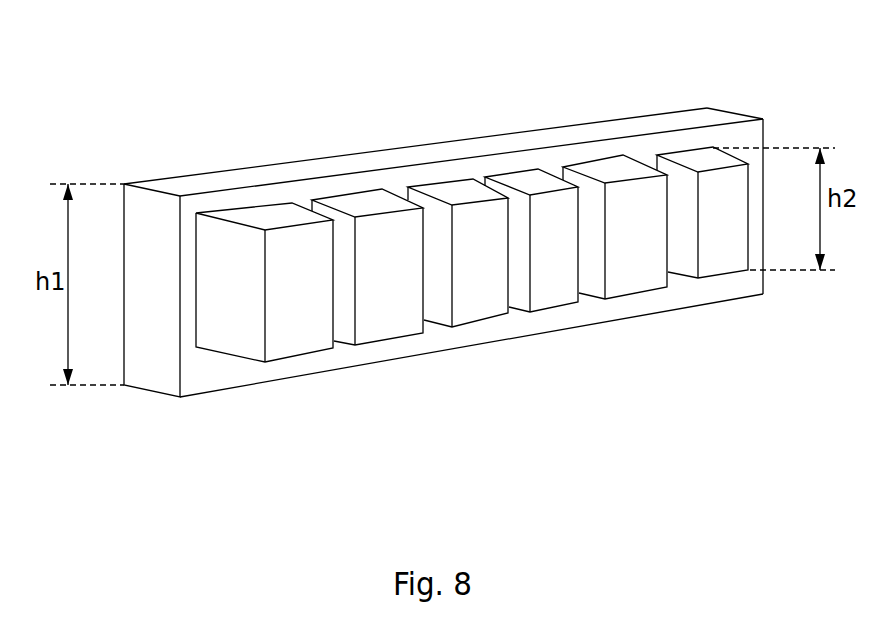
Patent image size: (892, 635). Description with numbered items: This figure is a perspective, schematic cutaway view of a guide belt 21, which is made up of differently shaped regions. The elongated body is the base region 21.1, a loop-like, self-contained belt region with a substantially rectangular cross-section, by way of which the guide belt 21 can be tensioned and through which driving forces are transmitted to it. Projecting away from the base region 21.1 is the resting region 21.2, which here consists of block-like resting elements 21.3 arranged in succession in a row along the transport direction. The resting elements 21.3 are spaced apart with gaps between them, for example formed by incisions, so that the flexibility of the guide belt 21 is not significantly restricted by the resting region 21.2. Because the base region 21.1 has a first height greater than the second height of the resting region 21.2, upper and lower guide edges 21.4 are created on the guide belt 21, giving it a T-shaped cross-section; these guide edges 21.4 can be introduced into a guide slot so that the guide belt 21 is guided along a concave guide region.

The guide belt 21 is at (443, 241).
The base region 21.1 is at (153, 367).
The resting region 21.2 is at (282, 393).
The resting elements 21.3 is at (383, 312).
The guide edges 21.4 is at (228, 183).